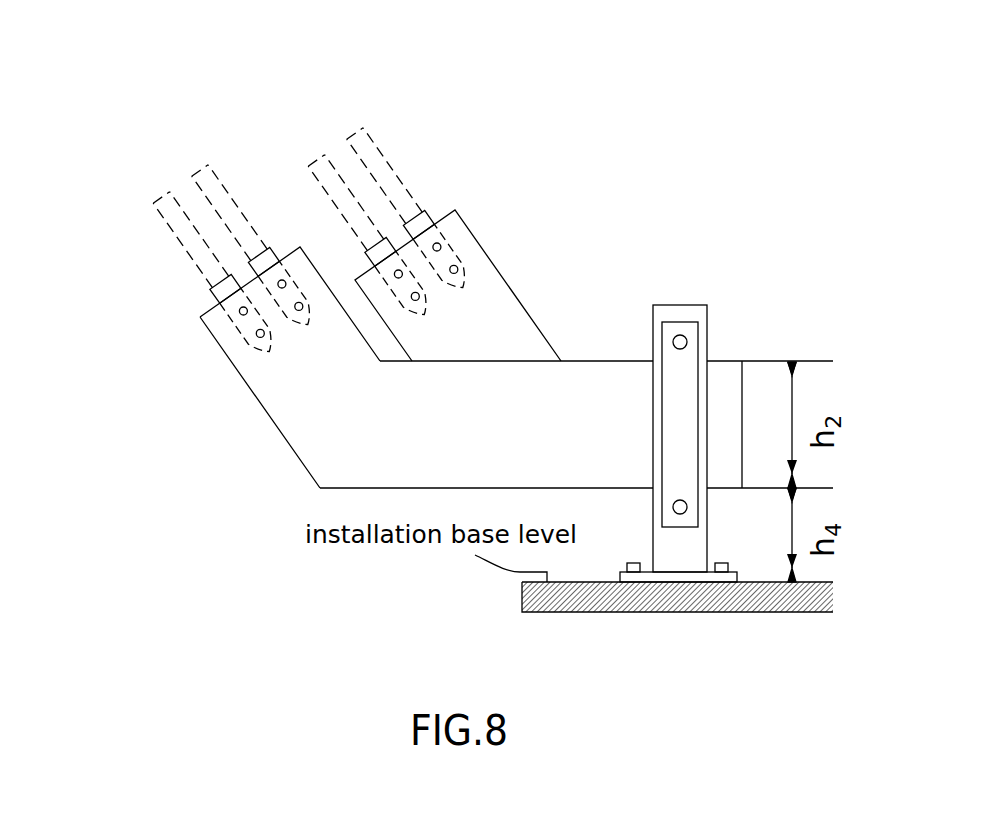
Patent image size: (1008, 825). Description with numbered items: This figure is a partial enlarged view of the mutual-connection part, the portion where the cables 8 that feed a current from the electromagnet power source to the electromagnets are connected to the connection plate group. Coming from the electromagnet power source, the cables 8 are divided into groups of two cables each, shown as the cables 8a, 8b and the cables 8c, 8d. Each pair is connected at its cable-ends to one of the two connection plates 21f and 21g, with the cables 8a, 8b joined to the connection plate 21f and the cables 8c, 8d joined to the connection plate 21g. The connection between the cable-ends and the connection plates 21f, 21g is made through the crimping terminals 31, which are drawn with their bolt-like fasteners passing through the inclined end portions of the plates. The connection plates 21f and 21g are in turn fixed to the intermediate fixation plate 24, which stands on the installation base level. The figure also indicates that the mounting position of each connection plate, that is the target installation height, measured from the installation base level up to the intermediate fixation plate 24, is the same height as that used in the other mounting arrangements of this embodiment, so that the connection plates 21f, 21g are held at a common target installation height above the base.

The cables 8 is at (286, 172).
The cable 8a is at (357, 130).
The cable 8b is at (315, 157).
The cable 8c is at (203, 167).
The cable 8d is at (170, 215).
The connection plate 21f is at (508, 333).
The connection plate 21g is at (323, 428).
The intermediate fixation plate 24 is at (685, 305).
The crimping terminals 31 is at (468, 233).